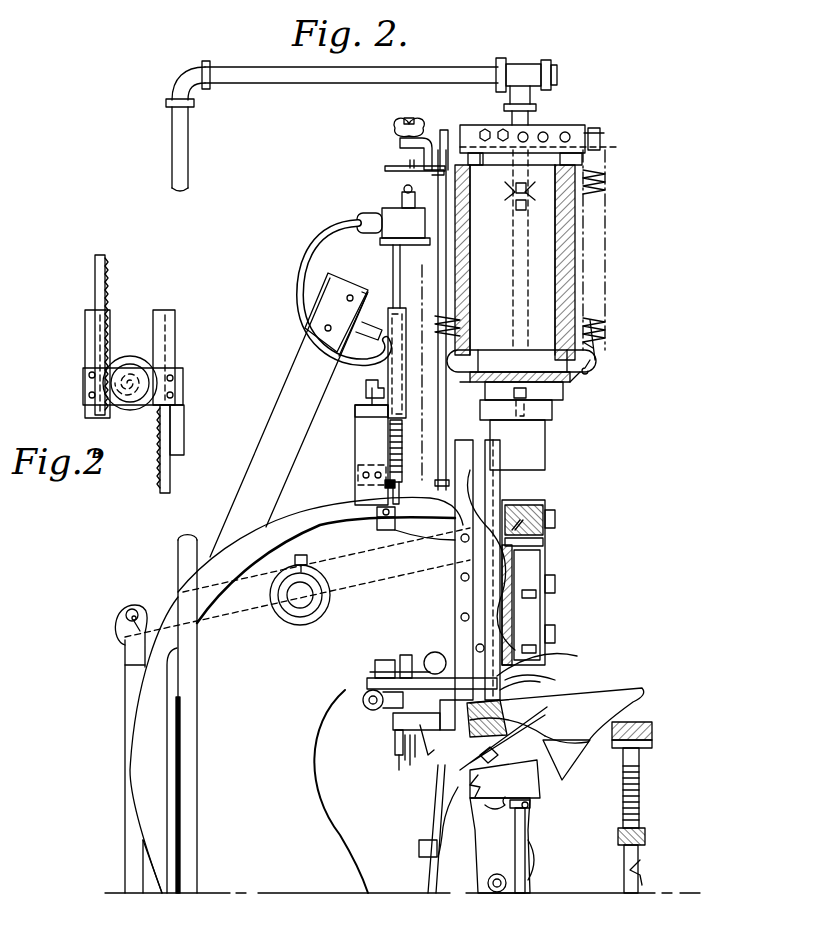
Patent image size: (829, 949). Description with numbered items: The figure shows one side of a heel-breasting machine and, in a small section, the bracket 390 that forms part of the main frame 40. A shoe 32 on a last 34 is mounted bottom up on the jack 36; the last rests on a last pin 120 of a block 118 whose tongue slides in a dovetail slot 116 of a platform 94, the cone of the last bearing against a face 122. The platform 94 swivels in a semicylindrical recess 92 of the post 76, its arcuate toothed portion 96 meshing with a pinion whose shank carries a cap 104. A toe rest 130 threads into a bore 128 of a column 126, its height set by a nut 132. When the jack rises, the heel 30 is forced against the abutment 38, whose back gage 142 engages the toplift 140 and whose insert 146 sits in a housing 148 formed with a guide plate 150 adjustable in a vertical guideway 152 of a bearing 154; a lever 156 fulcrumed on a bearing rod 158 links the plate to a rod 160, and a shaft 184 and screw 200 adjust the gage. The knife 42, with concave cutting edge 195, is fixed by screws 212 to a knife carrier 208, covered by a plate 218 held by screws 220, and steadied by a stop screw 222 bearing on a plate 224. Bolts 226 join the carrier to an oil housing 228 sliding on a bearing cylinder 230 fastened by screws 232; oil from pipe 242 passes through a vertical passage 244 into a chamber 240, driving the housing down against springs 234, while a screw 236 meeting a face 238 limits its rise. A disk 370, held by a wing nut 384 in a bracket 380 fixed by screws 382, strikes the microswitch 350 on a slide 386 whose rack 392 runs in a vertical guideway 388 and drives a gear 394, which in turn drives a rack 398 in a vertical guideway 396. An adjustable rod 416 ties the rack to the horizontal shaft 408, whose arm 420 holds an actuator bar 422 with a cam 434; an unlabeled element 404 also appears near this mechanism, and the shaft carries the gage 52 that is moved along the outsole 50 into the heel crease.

In FIG. 2, the pipe 242 is at (518, 112).
In FIG. 2, the main frame 40 is at (530, 133).
In FIG. 2, the screws 232 is at (545, 133).
In FIG. 2, the face 238 is at (588, 152).
In FIG. 2, the springs 234 is at (605, 182).
In FIG. 2, the screw 236 is at (530, 200).
In FIG. 2, the oil housing 228 is at (565, 255).
In FIG. 2, the bearing cylinder 230 is at (540, 305).
In FIG. 2, the vertical passage 244 is at (492, 280).
In FIG. 2, the chamber 240 is at (572, 378).
In FIG. 2, the bolts 226 is at (530, 408).
In FIG. 2, the wing nut 384 is at (400, 126).
In FIG. 2, the disk 370 is at (392, 168).
In FIG. 2, the microswitch 350 is at (356, 195).
In FIG. 2, the slide 386 is at (393, 215).
In FIG. 2B, the slide 386 is at (95, 270).
In FIG. 2, the bracket 380 is at (440, 225).
In FIG. 2, the bracket 390 is at (366, 423).
In FIG. 2B, the bracket 390 is at (184, 430).
In FIG. 2, the gear 394 is at (405, 380).
In FIG. 2B, the gear 394 is at (133, 356).
In FIG. 2, the rack 398 is at (402, 450).
In FIG. 2B, the rack 398 is at (170, 470).
In FIG. 2, the screws 382 is at (464, 320).
In FIG. 2, the bearing 154 is at (505, 480).
In FIG. 2, the guide plate 150 is at (505, 490).
In FIG. 2, the knife carrier 208 is at (510, 493).
In FIG. 2, the screws 220 is at (555, 512).
In FIG. 2, the plate 224 is at (548, 540).
In FIG. 2, the plate 218 is at (548, 565).
In FIG. 2, the knife 42 is at (520, 578).
In FIG. 2, the screws 212 is at (546, 642).
In FIG. 2, the adjustable rod 416 is at (357, 494).
In FIG. 2, the vertical guideway 152 is at (460, 530).
In FIG. 2, the lever 156 is at (380, 562).
In FIG. 2, the stop screw 222 is at (480, 580).
In FIG. 2, the bearing rod 158 is at (297, 600).
In FIG. 2, the rod 160 is at (125, 690).
In FIG. 2, the shaft 184 is at (410, 660).
In FIG. 2, the housing 148 is at (435, 652).
In FIG. 2, the abutment 38 is at (337, 697).
In FIG. 2, the cutting edge 195 is at (585, 660).
In FIG. 2, the gage 52 is at (537, 683).
In FIG. 2, the outsole 50 is at (607, 690).
In FIG. 2, the heel 30 is at (520, 693).
In FIG. 2, the toplift 140 is at (543, 728).
In FIG. 2, the toe rest 130 is at (654, 730).
In FIG. 2, the screw 200 is at (366, 704).
In FIG. 2, the horizontal shaft 408 is at (395, 735).
In FIG. 2, the insert 146 is at (442, 741).
In FIG. 2, the face 122 is at (475, 728).
In FIG. 2, the dovetail slot 116 is at (503, 738).
In FIG. 2, the last pin 120 is at (538, 744).
In FIG. 2, the last 34 is at (566, 760).
In FIG. 2, the shoe 32 is at (593, 727).
In FIG. 2, the jack 36 is at (683, 819).
In FIG. 2, the back gage 142 is at (400, 757).
In FIG. 2, the arm 420 is at (438, 790).
In FIG. 2, the lever 404 is at (458, 791).
In FIG. 2, the block 118 is at (525, 790).
In FIG. 2, the platform 94 is at (528, 815).
In FIG. 2, the cam 434 is at (453, 822).
In FIG. 2, the semicylindrical recess 92 is at (513, 825).
In FIG. 2, the column 126 is at (638, 852).
In FIG. 2, the nut 132 is at (619, 836).
In FIG. 2, the bore 128 is at (642, 873).
In FIG. 2, the actuator bar 422 is at (423, 842).
In FIG. 2, the post 76 is at (480, 850).
In FIG. 2, the arcuate toothed portion 96 is at (535, 885).
In FIG. 2, the cap 104 is at (503, 890).
In FIG. 2B, the rack 392 is at (107, 275).
In FIG. 2B, the vertical guideway 388 is at (98, 343).
In FIG. 2B, the vertical guideway 396 is at (170, 345).